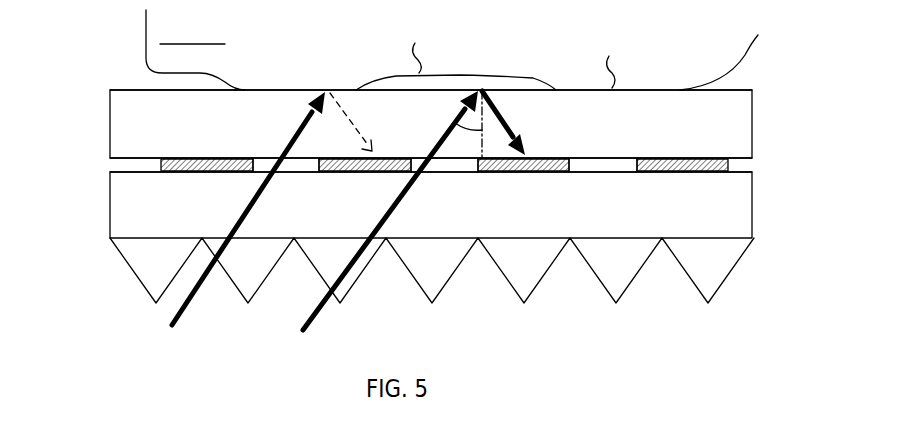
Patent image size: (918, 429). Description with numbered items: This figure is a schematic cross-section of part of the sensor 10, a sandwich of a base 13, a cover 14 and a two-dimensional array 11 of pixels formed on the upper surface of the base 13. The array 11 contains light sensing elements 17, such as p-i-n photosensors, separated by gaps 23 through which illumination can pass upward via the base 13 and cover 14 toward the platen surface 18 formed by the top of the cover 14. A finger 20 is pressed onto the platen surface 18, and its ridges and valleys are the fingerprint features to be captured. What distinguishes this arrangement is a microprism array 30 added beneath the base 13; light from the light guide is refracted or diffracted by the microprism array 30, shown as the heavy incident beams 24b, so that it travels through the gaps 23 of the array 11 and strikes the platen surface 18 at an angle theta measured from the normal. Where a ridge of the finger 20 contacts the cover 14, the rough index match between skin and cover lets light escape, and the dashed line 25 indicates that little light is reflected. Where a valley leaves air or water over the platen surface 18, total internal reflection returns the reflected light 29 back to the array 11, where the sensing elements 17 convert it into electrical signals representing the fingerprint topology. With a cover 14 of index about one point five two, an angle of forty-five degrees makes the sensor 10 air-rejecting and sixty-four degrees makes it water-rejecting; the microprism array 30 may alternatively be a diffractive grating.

The sensor 10 is at (100, 89).
The two-dimensional array 11 is at (755, 155).
The base 13 is at (752, 210).
The cover 14 is at (752, 118).
The sensing element 17 is at (182, 172).
The platen surface 18 is at (743, 88).
The finger 20 is at (753, 47).
The gaps 23 is at (309, 173).
The incident light beams 24b is at (235, 229).
The dashed line 25 is at (347, 117).
The reflected light 29 is at (505, 113).
The microprism array 30 is at (734, 268).